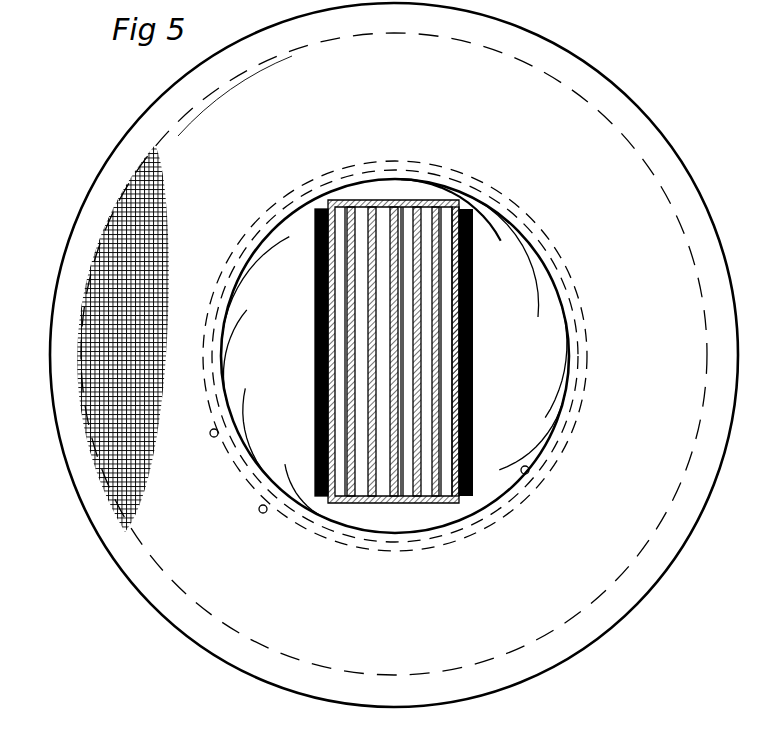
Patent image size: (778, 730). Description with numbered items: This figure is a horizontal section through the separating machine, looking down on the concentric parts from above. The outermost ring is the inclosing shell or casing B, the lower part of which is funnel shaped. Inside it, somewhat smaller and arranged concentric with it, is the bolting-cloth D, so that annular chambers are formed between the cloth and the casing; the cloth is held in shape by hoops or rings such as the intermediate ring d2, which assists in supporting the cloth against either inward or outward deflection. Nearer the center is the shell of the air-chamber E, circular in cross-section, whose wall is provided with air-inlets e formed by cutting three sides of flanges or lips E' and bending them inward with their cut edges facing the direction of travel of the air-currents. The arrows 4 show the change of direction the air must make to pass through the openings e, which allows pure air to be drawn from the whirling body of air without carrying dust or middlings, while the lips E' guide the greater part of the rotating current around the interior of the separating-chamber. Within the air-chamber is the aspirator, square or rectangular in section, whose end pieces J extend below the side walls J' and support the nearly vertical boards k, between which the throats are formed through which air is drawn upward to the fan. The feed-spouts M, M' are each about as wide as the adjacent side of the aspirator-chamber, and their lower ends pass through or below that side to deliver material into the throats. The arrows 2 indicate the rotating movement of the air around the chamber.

The inclosing shell or casing B is at (52, 352).
The bolting-cloth D is at (166, 137).
The hoop or ring d2 is at (570, 425).
The shell of air-chamber E is at (409, 356).
The flanges or lips E' is at (394, 337).
The air-inlets e is at (238, 384).
The feed-spout M is at (411, 352).
The feed-spout M' is at (303, 352).
The end pieces of aspirator casing J is at (393, 365).
The side pieces or walls of aspirator casing J' is at (481, 351).
The nearly vertically-arranged boards k is at (343, 480).
The direction of rotation 2 is at (503, 130).
The arrows 4 is at (549, 330).